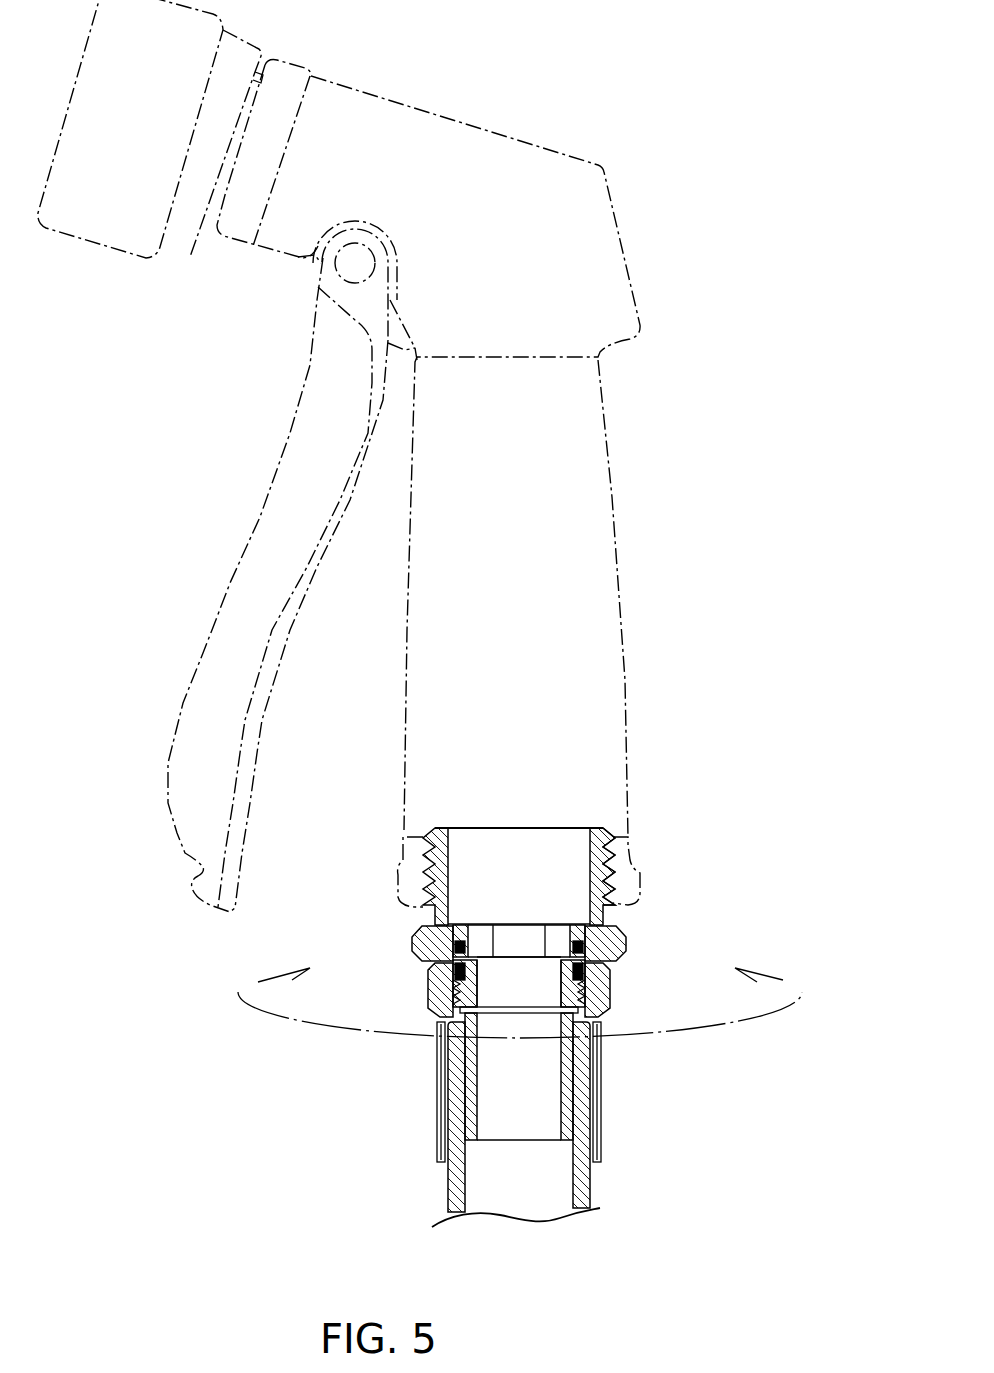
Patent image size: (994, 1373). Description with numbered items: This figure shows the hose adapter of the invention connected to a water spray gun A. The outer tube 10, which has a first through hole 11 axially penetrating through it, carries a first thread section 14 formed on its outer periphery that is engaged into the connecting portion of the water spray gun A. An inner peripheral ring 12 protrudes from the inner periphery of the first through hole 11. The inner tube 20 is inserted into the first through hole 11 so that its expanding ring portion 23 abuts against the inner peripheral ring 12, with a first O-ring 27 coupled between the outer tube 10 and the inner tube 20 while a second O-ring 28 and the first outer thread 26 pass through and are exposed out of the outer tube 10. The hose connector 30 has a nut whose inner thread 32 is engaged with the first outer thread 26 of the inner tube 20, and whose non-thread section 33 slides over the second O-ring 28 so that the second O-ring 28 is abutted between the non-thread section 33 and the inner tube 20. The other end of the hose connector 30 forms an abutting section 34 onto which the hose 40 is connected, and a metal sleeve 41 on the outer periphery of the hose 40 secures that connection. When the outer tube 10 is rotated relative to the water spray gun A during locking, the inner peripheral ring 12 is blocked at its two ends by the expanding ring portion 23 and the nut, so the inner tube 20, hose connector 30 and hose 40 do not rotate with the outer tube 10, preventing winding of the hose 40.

The water spray gun A is at (610, 478).
The outer tube 10 is at (536, 812).
The first through hole 11 is at (576, 827).
The first thread section 14 is at (615, 877).
The inner peripheral ring 12 is at (523, 930).
The inner tube 20 is at (509, 914).
The expanding ring portion 23 is at (433, 917).
The first O-ring 27 is at (427, 948).
The second O-ring 28 is at (428, 970).
The hose connector 30 is at (501, 1028).
The non-thread section 33 is at (608, 985).
The first outer thread 26 is at (588, 998).
The inner thread 32 is at (650, 1013).
The abutting section 34 is at (568, 1073).
The hose 40 is at (596, 1187).
The metal sleeve 41 is at (600, 1115).